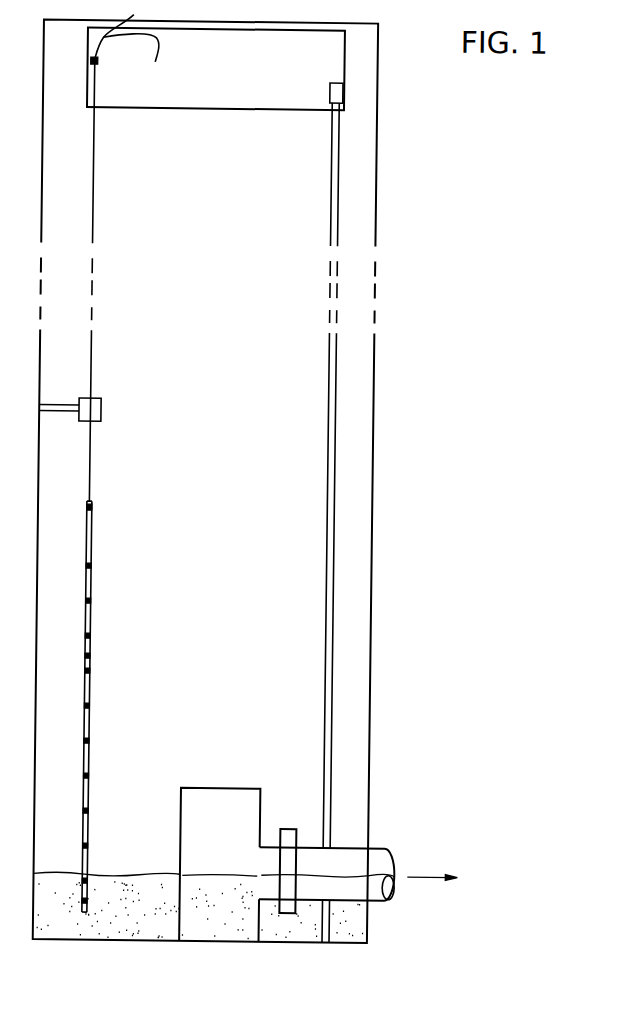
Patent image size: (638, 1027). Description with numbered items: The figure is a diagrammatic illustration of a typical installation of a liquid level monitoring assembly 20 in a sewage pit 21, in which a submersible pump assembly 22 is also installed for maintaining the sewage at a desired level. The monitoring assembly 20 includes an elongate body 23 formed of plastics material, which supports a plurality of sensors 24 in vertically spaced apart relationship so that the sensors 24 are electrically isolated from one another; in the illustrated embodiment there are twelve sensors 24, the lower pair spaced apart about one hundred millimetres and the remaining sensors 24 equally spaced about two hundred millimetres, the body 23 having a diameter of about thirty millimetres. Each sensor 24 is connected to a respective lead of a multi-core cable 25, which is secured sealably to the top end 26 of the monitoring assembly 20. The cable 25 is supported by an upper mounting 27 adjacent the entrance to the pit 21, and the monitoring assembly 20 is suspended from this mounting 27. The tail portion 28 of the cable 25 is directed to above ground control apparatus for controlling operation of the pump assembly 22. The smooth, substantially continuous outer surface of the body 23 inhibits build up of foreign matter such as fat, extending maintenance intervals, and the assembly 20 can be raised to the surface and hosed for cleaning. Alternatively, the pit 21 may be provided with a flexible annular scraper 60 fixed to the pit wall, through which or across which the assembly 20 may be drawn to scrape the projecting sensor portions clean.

The monitoring assembly 20 is at (98, 573).
The sewage pit 21 is at (237, 621).
The submersible pump assembly 22 is at (200, 787).
The elongate body 23 is at (99, 654).
The sensors 24 is at (99, 598).
The multi-core cable 25 is at (96, 209).
The top end 26 is at (99, 505).
The upper mounting 27 is at (100, 60).
The tail portion 28 is at (141, 45).
The flexible annular scraper 60 is at (108, 411).